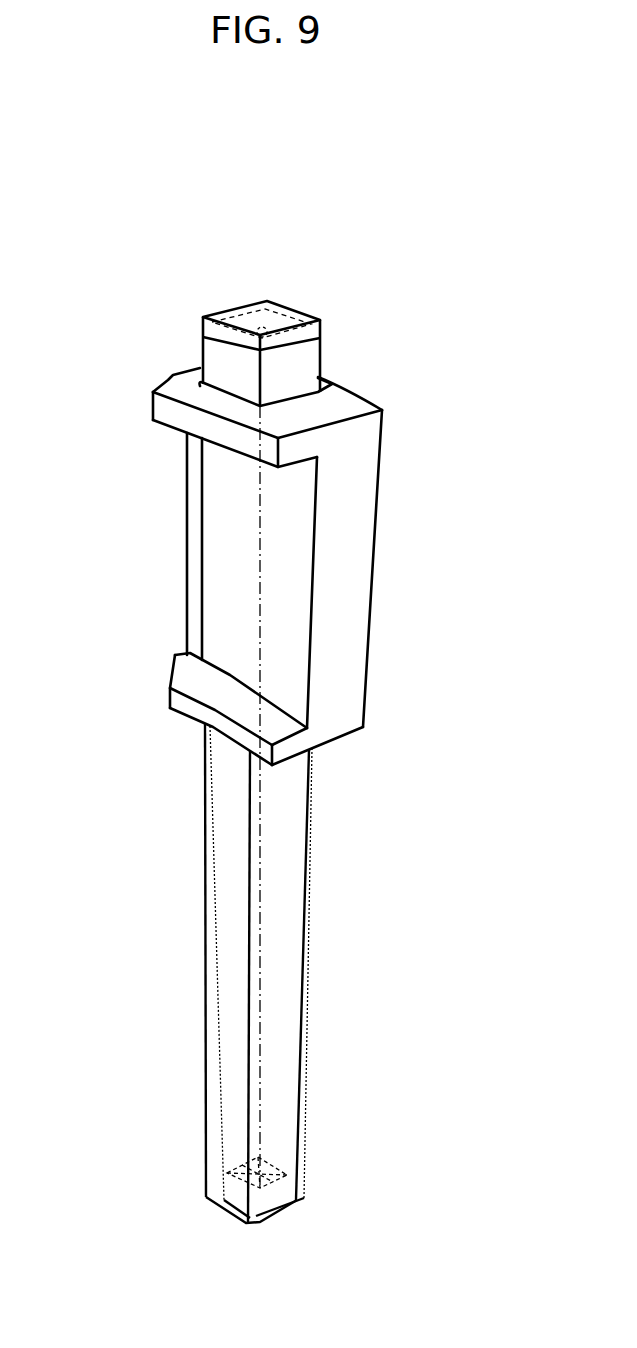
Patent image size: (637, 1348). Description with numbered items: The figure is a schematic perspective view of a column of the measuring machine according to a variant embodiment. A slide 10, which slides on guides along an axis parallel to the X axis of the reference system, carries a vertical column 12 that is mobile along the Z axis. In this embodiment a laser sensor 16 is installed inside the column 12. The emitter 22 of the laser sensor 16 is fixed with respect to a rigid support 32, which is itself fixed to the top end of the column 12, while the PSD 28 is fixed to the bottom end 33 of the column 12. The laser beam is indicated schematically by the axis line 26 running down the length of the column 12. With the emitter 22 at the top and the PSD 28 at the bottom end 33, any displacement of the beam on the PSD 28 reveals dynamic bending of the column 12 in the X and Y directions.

The slide 10 is at (357, 573).
The vertical column 12 is at (287, 853).
The laser sensor 16 is at (306, 358).
The emitter 22 is at (287, 335).
The central axis 26 is at (260, 580).
The PSD 28 is at (263, 1180).
The rigid support 32 is at (223, 310).
The bottom end 33 is at (215, 1196).